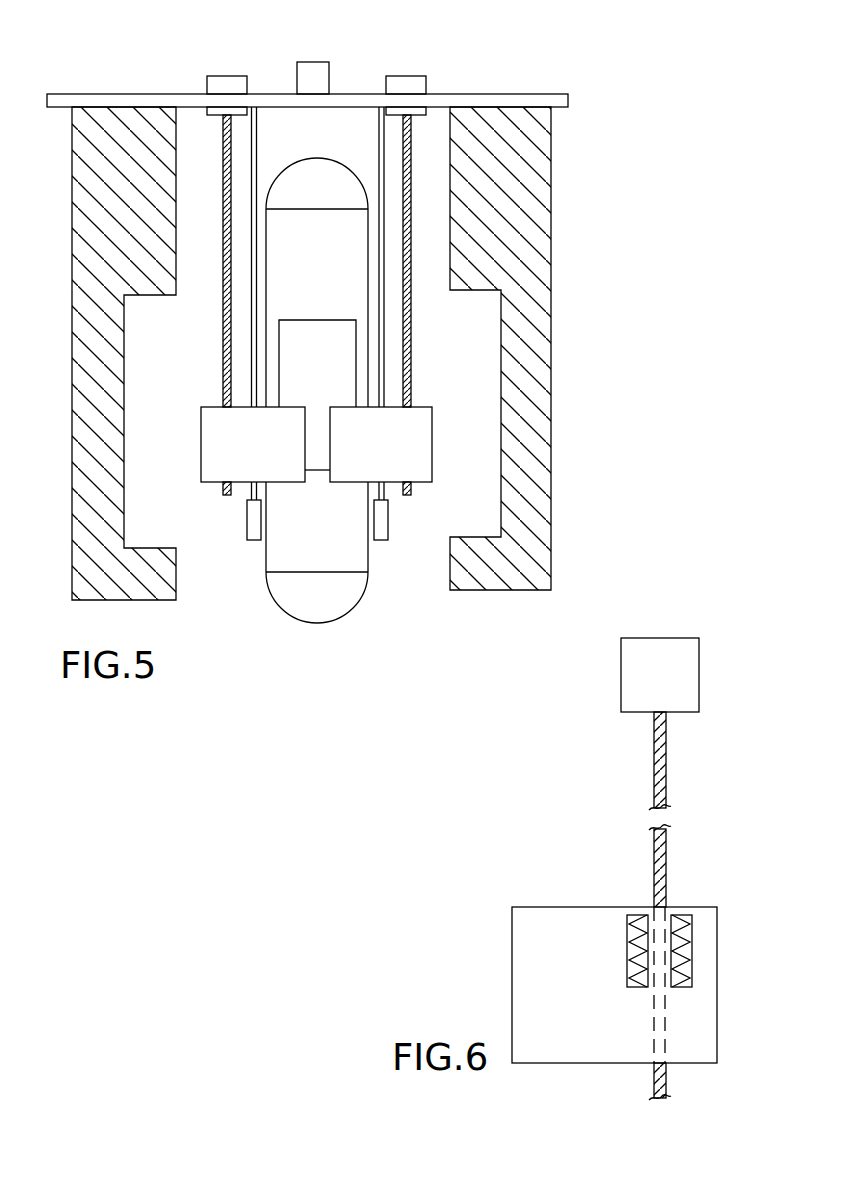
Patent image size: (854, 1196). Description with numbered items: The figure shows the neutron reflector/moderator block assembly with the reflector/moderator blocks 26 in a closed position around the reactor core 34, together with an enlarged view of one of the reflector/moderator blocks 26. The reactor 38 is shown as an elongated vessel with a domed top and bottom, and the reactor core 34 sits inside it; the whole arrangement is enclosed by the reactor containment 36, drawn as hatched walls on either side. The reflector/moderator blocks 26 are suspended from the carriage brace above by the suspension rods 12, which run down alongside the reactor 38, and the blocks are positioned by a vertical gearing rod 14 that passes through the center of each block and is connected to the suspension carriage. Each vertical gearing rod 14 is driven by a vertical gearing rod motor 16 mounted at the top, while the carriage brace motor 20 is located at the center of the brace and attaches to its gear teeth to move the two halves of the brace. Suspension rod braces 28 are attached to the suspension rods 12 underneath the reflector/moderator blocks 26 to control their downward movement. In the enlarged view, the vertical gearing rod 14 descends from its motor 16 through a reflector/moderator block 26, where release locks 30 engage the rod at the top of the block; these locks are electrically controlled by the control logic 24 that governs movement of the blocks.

In FIG. 5, the suspension rods 12 is at (256, 148).
In FIG. 5, the vertical gearing rod 14 is at (223, 357).
In FIG. 6, the vertical gearing rod 14 is at (654, 760).
In FIG. 5, the vertical gearing rod motor 16 is at (225, 76).
In FIG. 6, the vertical gearing rod motor 16 is at (660, 638).
In FIG. 5, the carriage brace motor 20 is at (311, 62).
In FIG. 6, the control logic for movement 24 is at (690, 930).
In FIG. 5, the neutron reflector/moderator blocks 26 is at (316, 444).
In FIG. 6, the neutron reflector/moderator blocks 26 is at (614, 985).
In FIG. 5, the suspension rod brace 28 is at (254, 540).
In FIG. 6, the release locks 30 is at (628, 931).
In FIG. 5, the reactor core 34 is at (323, 340).
In FIG. 5, the reactor containment 36 is at (82, 296).
In FIG. 5, the reactor 38 is at (318, 606).